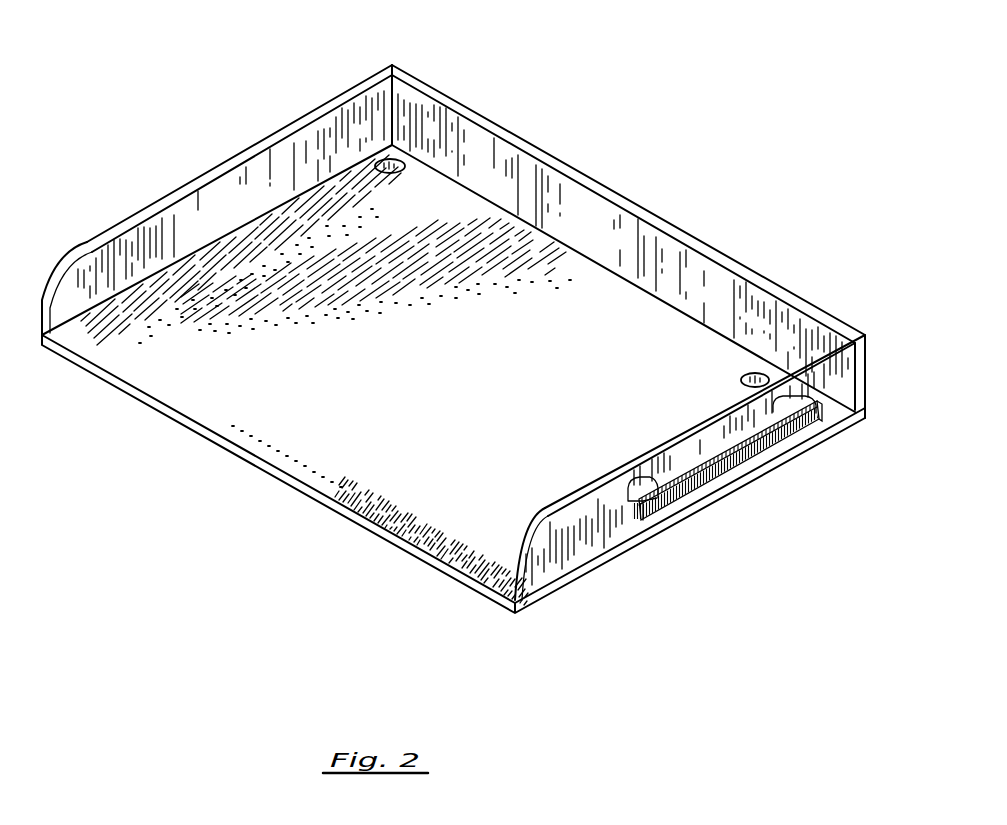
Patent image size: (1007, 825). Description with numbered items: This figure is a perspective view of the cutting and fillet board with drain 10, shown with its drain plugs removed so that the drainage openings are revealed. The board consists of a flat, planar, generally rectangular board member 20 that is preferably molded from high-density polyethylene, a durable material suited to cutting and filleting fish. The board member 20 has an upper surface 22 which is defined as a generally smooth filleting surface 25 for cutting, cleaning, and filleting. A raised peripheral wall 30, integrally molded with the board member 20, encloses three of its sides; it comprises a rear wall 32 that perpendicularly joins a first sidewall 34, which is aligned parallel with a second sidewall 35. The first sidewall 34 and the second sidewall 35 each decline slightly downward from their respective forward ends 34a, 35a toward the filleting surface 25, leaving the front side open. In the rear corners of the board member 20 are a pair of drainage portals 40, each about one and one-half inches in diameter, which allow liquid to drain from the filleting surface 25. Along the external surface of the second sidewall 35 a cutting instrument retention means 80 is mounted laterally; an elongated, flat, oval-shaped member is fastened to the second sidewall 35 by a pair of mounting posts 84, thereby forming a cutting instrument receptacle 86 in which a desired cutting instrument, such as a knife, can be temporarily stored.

The cutting and fillet board with drain 10 is at (623, 75).
The board member 20 is at (202, 462).
The upper surface 22 is at (360, 493).
The filleting surface 25 is at (429, 371).
The peripheral wall 30 is at (668, 200).
The rear wall 32 is at (560, 183).
The first sidewall 34 is at (165, 190).
The forward end of first sidewall 34a is at (82, 300).
The second sidewall 35 is at (545, 562).
The forward end of second sidewall 35a is at (508, 538).
The drainage portal 40 is at (391, 157).
The cutting instrument retention means 80 is at (773, 487).
The mounting post 84 is at (633, 498).
The cutting instrument receptacle 86 is at (673, 472).